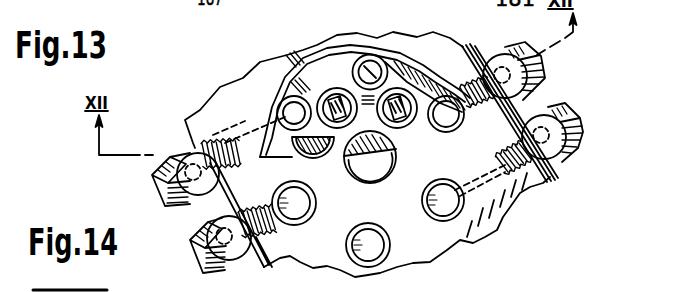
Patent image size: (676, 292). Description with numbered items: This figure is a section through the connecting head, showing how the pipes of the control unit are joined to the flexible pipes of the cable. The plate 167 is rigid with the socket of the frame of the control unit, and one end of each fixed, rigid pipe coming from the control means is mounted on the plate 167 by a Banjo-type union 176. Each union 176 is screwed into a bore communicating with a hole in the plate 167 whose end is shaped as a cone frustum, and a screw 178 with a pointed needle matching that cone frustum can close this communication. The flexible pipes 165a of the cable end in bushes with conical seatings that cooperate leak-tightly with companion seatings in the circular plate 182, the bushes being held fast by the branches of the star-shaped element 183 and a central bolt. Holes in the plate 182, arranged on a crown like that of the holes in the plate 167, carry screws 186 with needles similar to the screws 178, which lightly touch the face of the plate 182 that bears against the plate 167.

The flexible pipe 165a is at (338, 94).
The plate 167 is at (517, 202).
The union 176 is at (183, 153).
The screw 178 is at (503, 58).
The circular plate 182 is at (420, 67).
The star-shaped element 183 is at (413, 125).
The screw 186 is at (368, 66).